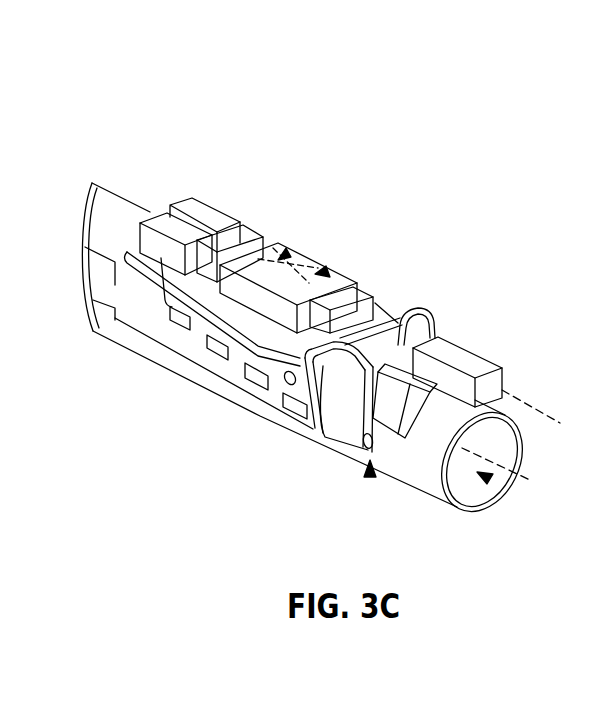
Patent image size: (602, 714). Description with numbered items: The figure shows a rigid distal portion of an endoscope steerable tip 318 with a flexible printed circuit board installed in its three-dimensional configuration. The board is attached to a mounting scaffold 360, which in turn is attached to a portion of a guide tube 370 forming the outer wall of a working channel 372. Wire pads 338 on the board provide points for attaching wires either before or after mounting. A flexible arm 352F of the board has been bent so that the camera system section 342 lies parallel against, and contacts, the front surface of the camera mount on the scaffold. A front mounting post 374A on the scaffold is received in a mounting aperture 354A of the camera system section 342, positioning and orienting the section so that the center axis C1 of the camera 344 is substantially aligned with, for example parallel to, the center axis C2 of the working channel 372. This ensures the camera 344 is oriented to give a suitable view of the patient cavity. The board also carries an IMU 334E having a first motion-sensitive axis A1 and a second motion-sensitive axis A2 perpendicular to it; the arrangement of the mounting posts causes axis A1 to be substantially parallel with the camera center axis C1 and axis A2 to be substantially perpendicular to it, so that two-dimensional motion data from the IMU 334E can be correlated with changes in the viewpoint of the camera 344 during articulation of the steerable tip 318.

The endoscope steerable tip 318 is at (311, 338).
The IMU 334E is at (298, 258).
The first motion-sensitive axis A1 is at (286, 254).
The second motion-sensitive axis A2 is at (326, 272).
The flexible arm 352F is at (418, 312).
The camera 344 is at (478, 354).
The center axis of camera C1 is at (546, 419).
The center axis of working channel lumen C2 is at (490, 476).
The mounting scaffold 360 is at (122, 310).
The wire pads 338 is at (262, 381).
The camera system section 342 is at (373, 395).
The mounting aperture 354A is at (370, 472).
The front mounting post 374A is at (378, 450).
The guide tube 370 is at (440, 497).
The working channel 372 is at (493, 482).